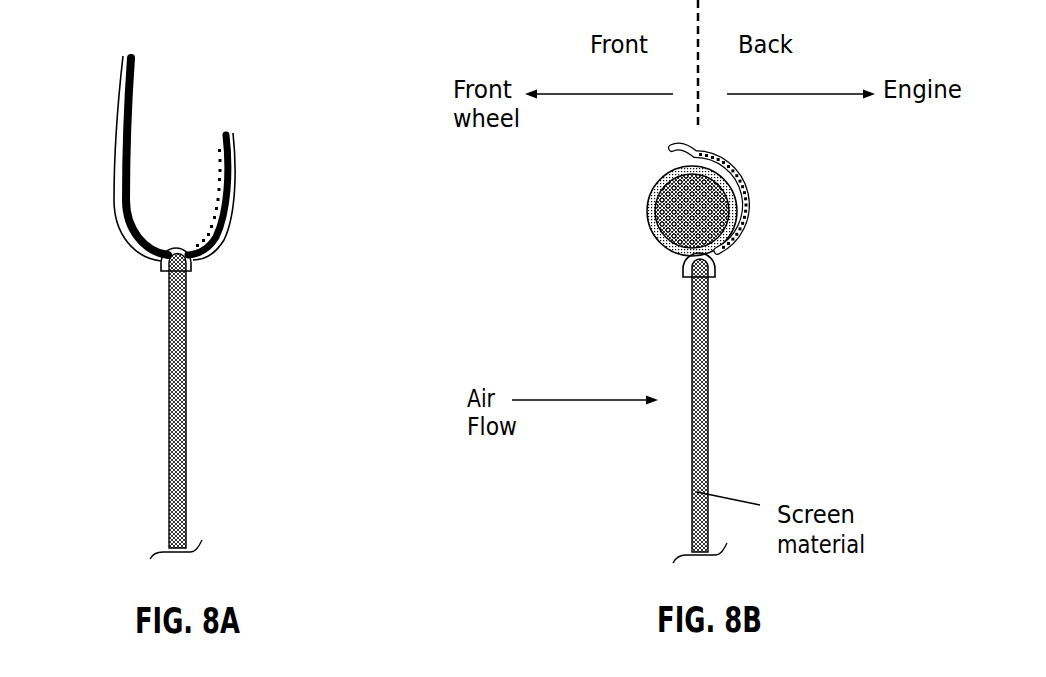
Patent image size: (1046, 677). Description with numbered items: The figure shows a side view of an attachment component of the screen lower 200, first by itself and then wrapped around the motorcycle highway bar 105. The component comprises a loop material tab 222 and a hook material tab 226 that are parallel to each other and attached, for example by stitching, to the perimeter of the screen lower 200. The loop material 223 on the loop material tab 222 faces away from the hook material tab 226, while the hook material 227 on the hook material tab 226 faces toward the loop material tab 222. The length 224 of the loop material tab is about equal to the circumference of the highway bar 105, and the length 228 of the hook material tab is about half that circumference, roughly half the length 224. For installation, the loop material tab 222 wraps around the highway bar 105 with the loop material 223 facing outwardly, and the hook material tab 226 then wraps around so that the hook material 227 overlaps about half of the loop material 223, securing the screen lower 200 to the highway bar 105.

In FIG. 8A, the screen lower 200 is at (180, 488).
In FIG. 8A, the loop material tab 222 is at (132, 108).
In FIG. 8A, the length of the loop material tab 224 is at (115, 152).
In FIG. 8A, the hook material tab 226 is at (222, 140).
In FIG. 8A, the length of the hook material tab 228 is at (235, 165).
In FIG. 8B, the loop material 223 is at (650, 227).
In FIG. 8B, the hook material 227 is at (697, 161).
In FIG. 8B, the motorcycle highway bar 105 is at (710, 221).